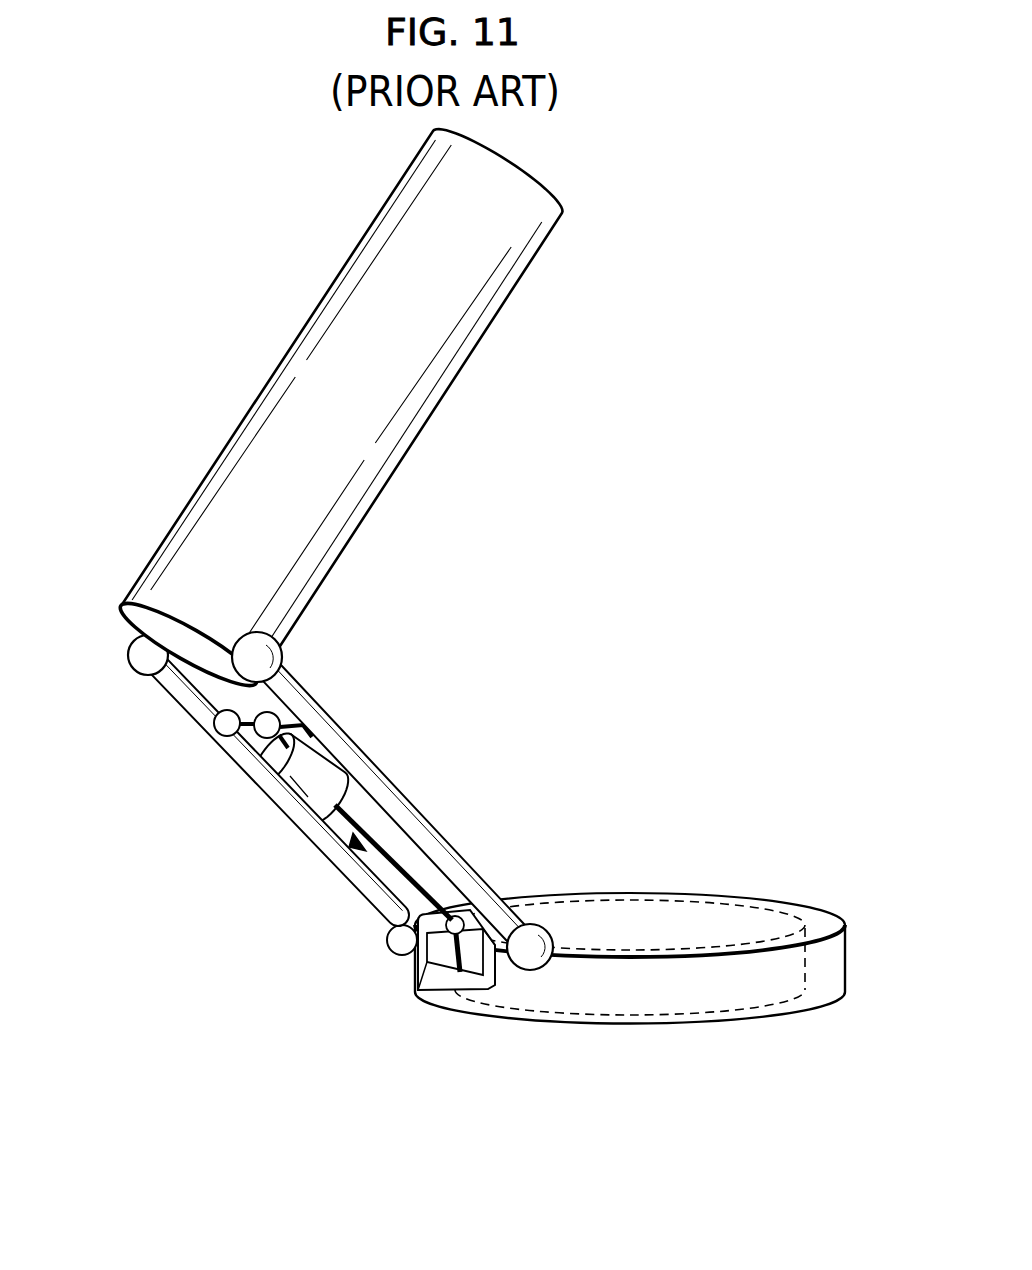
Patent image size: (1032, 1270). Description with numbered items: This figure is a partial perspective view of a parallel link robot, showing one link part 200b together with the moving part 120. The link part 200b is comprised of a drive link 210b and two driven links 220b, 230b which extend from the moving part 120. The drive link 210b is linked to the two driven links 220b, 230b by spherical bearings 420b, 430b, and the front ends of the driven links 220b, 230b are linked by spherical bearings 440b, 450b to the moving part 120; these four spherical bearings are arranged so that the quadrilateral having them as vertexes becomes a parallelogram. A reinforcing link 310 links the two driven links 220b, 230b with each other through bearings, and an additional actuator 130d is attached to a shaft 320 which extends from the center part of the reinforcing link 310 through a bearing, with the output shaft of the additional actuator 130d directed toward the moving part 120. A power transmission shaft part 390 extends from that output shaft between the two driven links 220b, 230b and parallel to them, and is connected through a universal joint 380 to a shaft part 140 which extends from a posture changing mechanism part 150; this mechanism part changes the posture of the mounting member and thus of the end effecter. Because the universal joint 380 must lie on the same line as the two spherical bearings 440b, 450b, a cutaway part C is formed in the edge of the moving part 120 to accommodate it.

The link part 200b is at (376, 413).
The drive link 210b is at (512, 252).
The moving part 120 is at (817, 993).
The posture changing mechanism part 150 is at (683, 1017).
The cutaway part C is at (527, 917).
The universal joint 380 is at (417, 960).
The shaft part 140 is at (440, 965).
The spherical bearing 440b is at (393, 947).
The spherical bearing 450b is at (530, 957).
The spherical bearing 420b is at (138, 660).
The spherical bearing 430b is at (282, 651).
The driven link 220b is at (360, 893).
The driven link 230b is at (470, 867).
The shaft 320 is at (260, 773).
The reinforcing link 310 is at (247, 733).
The power transmission shaft part 390 is at (360, 860).
The additional actuator 130d is at (340, 810).